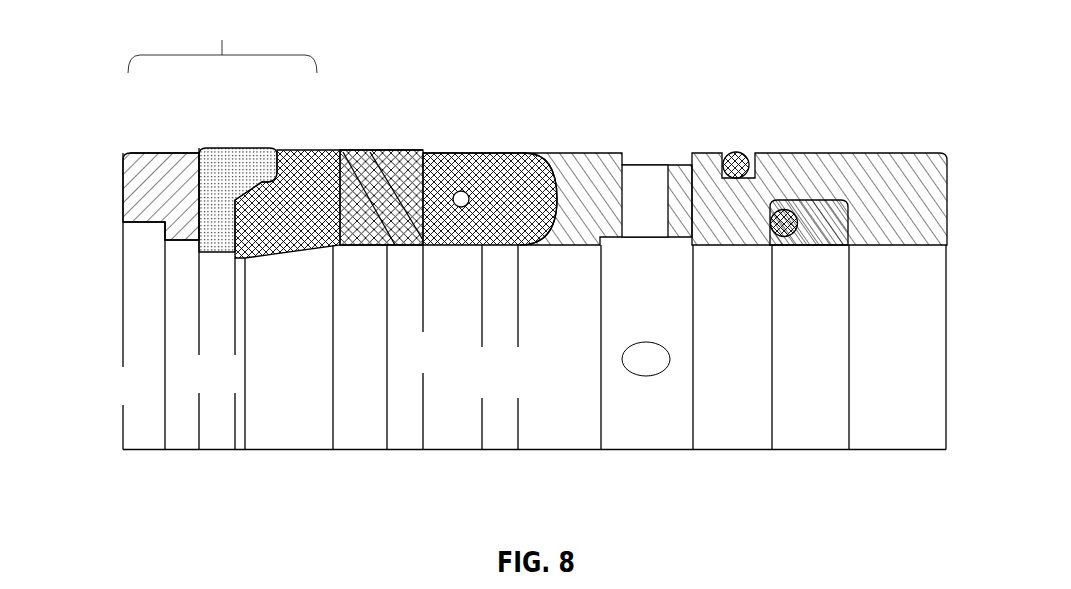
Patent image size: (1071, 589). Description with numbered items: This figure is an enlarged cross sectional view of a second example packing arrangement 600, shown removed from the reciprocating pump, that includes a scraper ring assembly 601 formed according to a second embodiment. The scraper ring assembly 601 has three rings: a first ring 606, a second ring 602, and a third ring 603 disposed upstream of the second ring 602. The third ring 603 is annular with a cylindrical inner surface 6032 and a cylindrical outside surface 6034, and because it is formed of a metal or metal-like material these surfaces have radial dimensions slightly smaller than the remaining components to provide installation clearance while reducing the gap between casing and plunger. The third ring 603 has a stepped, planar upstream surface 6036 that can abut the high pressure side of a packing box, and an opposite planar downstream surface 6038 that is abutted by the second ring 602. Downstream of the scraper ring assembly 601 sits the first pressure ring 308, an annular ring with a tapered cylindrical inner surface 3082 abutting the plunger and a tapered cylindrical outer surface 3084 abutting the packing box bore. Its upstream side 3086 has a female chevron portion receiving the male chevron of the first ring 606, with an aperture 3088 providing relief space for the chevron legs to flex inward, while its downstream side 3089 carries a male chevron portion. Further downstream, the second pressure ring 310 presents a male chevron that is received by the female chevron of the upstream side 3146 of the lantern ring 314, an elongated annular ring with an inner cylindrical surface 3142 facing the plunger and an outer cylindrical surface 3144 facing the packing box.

The packing arrangement 600 is at (453, 122).
The scraper ring assembly 601 is at (222, 43).
The second ring 602 is at (242, 167).
The third ring 603 is at (176, 151).
The first ring 606 is at (311, 157).
The inner surface 6032 is at (160, 226).
The outside surface 6034 is at (145, 150).
The upstream surface 6036 is at (120, 200).
The downstream surface 6038 is at (201, 198).
The first pressure ring 308 is at (401, 161).
The tapered cylindrical inner surface 3082 is at (408, 248).
The tapered cylindrical outer surface 3084 is at (360, 150).
The upstream side 3086 is at (352, 192).
The aperture 3088 is at (377, 205).
The downstream side 3089 is at (454, 209).
The second pressure ring 310 is at (505, 161).
The upstream side 3146 is at (547, 191).
The lantern ring 314 is at (917, 174).
The inner cylindrical surface 3142 is at (751, 247).
The outer cylindrical surface 3144 is at (771, 151).